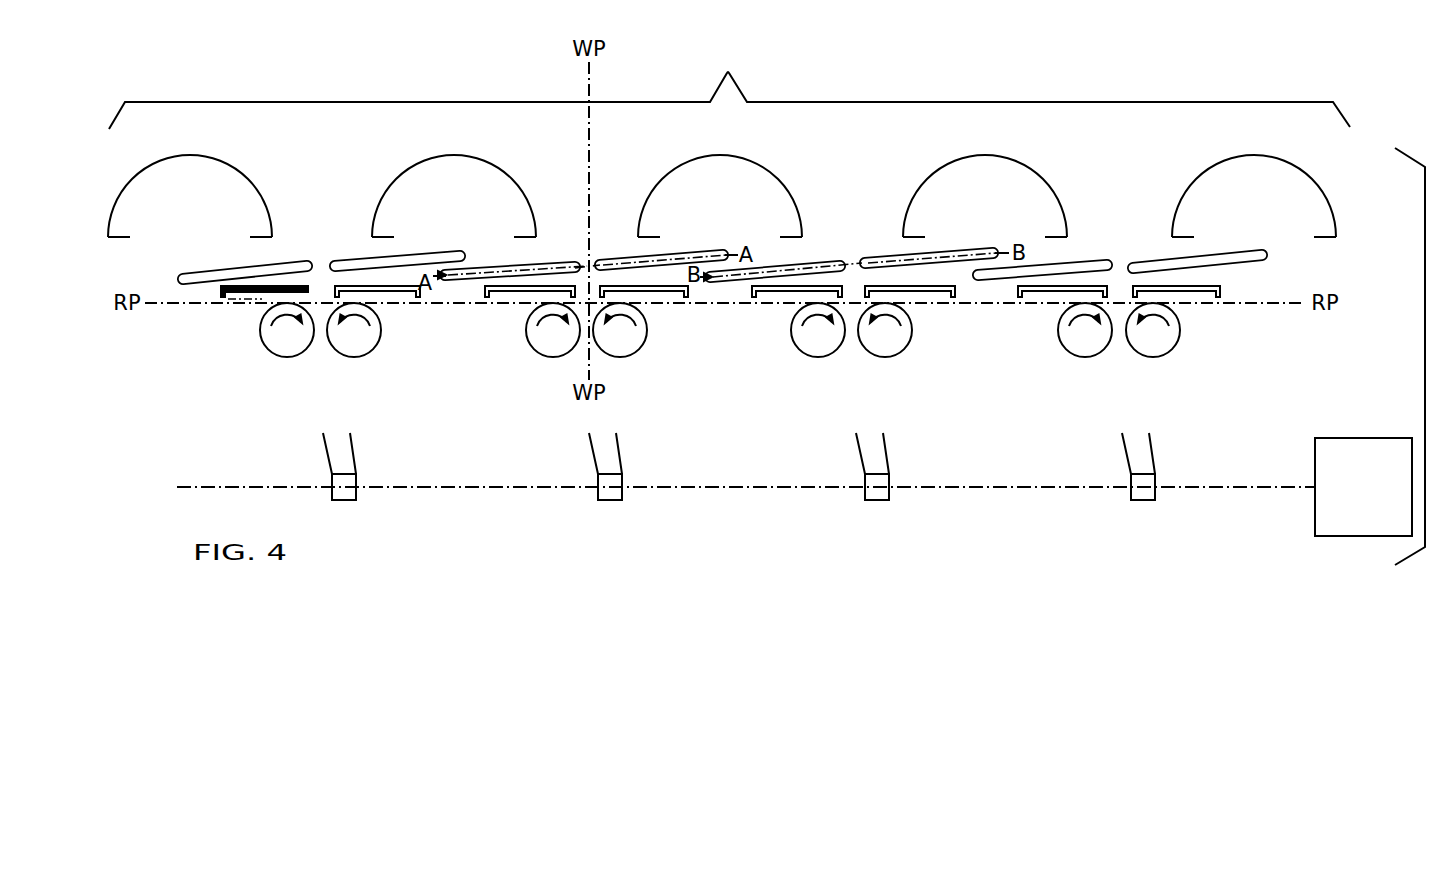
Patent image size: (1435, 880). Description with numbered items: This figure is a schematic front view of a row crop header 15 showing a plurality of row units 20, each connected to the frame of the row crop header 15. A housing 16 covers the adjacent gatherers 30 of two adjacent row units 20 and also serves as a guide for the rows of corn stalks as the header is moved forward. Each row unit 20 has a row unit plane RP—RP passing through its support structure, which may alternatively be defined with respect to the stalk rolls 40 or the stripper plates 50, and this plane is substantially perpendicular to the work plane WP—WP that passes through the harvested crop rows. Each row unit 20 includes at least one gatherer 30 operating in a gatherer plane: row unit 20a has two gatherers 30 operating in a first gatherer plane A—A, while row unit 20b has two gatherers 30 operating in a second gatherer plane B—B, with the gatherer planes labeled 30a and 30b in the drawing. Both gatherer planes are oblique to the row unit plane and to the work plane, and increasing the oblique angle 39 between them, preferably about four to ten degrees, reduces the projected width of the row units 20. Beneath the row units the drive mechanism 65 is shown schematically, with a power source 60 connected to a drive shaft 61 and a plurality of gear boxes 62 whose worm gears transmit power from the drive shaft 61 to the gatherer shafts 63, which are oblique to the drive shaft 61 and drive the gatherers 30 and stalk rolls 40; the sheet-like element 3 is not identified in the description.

The sheet 3 is at (705, 279).
The row crop header 15 is at (729, 87).
The housing 16 is at (1328, 203).
The row unit 20 is at (320, 246).
The row unit 20a is at (597, 246).
The row unit 20b is at (855, 246).
The gatherer 30 is at (485, 262).
The pivoted guide plate 30a is at (690, 258).
The pivoted guide plate 30b is at (778, 264).
The oblique angle 39 is at (256, 297).
The stalk rolls 40 is at (841, 356).
The stripper plates 50 is at (930, 299).
The power source 60 is at (1353, 521).
The drive shaft 61 is at (1057, 488).
The gear box 62 is at (343, 500).
The gatherer shafts 63 is at (326, 448).
The drive mechanism 65 is at (806, 552).